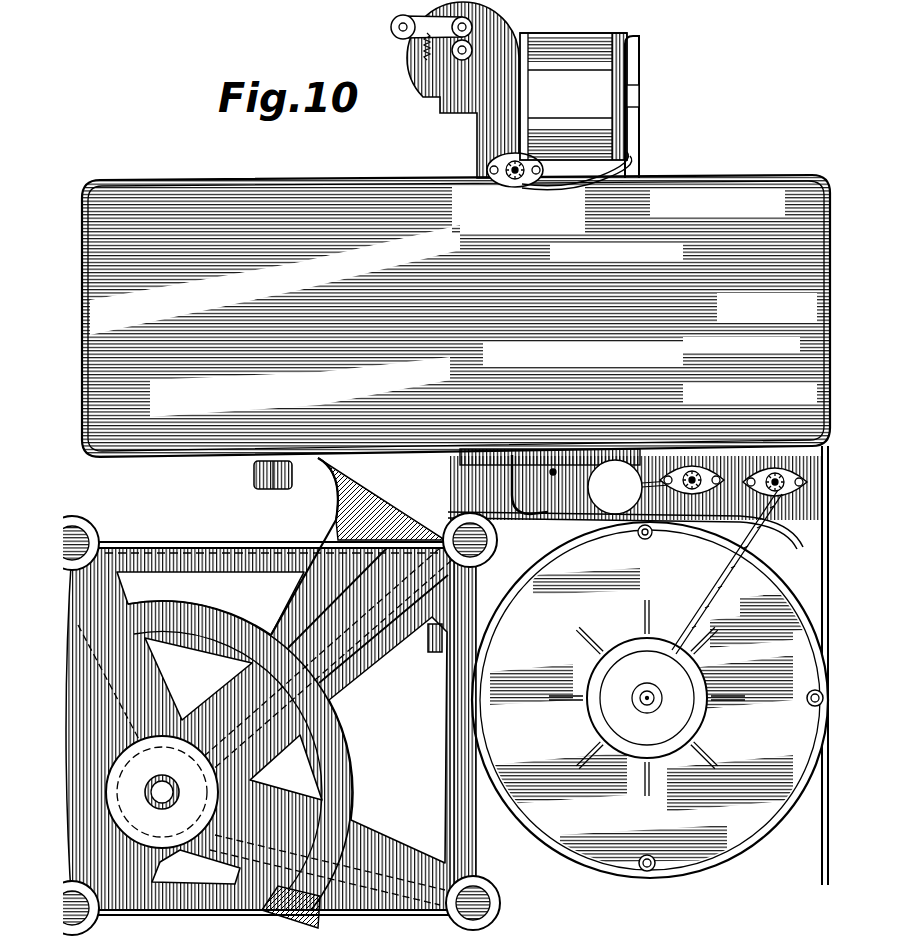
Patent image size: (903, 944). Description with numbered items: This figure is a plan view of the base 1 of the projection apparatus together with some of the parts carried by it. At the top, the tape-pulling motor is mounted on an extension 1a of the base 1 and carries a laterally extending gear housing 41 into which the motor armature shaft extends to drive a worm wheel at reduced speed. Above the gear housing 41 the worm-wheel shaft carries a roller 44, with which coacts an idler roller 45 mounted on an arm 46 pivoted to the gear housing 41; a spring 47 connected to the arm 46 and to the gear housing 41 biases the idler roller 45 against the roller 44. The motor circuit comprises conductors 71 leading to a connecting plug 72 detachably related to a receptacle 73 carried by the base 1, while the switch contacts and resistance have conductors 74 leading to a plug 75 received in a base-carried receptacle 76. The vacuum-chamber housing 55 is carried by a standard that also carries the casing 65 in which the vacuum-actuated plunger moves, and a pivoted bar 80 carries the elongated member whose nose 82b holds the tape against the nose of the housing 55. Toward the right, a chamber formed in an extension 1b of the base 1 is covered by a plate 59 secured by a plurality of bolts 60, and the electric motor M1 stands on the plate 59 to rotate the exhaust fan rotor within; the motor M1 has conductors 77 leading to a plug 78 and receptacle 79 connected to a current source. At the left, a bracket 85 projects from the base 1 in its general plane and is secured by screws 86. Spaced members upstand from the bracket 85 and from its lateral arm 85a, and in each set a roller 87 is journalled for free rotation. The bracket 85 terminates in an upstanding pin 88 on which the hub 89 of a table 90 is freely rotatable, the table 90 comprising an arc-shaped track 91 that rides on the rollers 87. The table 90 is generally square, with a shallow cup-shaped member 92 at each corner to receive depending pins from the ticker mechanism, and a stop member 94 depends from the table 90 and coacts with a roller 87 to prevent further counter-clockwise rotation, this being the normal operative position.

The base 1 is at (270, 215).
The extension of the base 1a is at (640, 118).
The extension of the base 1b is at (818, 580).
The gear housing 41 is at (430, 95).
The roller 44 is at (470, 50).
The idler roller 45 is at (470, 25).
The arm 46 is at (400, 32).
The spring 47 is at (424, 52).
The housing 55 is at (462, 458).
The plate 59 is at (758, 830).
The bolts 60 is at (647, 871).
The casing 65 is at (615, 487).
The conductors 71 is at (628, 162).
The connecting plug 72 is at (515, 179).
The receptacle 73 is at (497, 165).
The conductors 74 is at (652, 488).
The plug 75 is at (690, 492).
The receptacle 76 is at (712, 512).
The conductors 77 is at (720, 600).
The plug 78 is at (784, 480).
The receptacle 79 is at (796, 494).
The bar 80 is at (550, 466).
The nose 82b is at (458, 500).
The bracket 85 is at (300, 606).
The lateral arm 85a is at (245, 868).
The screws 86 is at (432, 640).
The roller 87 is at (312, 912).
The pin 88 is at (150, 795).
The hub 89 is at (107, 870).
The table 90 is at (355, 665).
The arc-shaped track 91 is at (340, 760).
The cup-shaped member 92 is at (502, 903).
The stop member 94 is at (272, 912).
The electric motor M1 is at (615, 712).